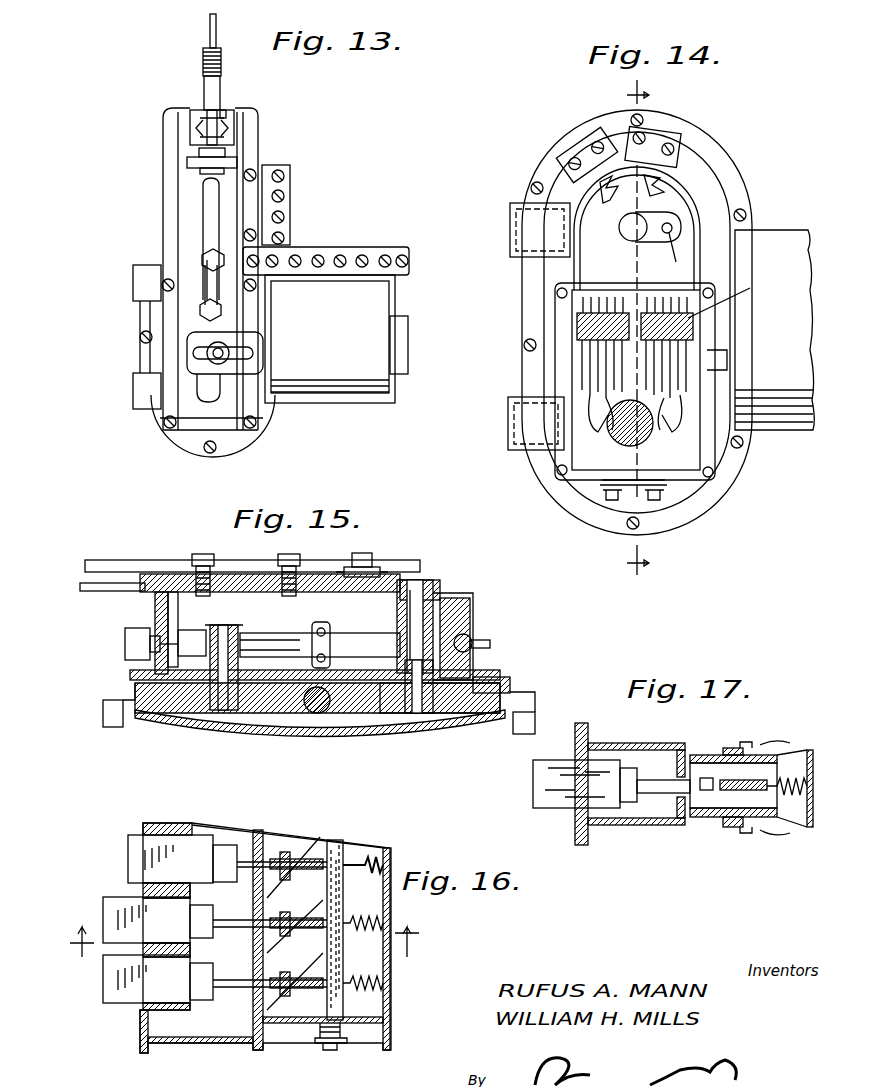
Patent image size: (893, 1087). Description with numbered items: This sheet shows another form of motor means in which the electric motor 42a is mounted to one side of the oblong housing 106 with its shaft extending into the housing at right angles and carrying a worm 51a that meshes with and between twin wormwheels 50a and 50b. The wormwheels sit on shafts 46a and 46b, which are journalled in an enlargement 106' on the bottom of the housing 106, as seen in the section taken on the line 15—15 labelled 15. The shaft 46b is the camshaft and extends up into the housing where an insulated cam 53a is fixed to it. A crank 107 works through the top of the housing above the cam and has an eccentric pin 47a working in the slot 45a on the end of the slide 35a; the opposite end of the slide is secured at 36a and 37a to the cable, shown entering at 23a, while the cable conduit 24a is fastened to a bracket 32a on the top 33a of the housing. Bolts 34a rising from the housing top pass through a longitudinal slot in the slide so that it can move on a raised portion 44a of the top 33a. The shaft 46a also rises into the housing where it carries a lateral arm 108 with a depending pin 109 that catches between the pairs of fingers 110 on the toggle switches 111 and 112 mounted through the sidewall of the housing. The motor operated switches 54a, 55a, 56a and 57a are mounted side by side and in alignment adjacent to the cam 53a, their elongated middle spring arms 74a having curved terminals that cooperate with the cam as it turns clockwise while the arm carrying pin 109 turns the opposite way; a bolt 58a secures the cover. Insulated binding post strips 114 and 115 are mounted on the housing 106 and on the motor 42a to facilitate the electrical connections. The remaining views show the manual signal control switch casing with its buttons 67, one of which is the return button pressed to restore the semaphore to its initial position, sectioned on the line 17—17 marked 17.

In FIG. 13, the operating rod 23a is at (217, 20).
In FIG. 13, the cable conduit 24a is at (219, 82).
In FIG. 13, the bracket 32a is at (224, 112).
In FIG. 13, the housing top 33a is at (235, 125).
In FIG. 15, the housing top 33a is at (95, 590).
In FIG. 13, the cable securing point 36a is at (199, 152).
In FIG. 13, the cable securing point 37a is at (187, 165).
In FIG. 13, the slide 35a is at (188, 336).
In FIG. 15, the slide 35a is at (160, 555).
In FIG. 13, the bolts 34a is at (215, 262).
In FIG. 15, the bolts 34a is at (214, 556).
In FIG. 13, the insulated binding post strip 114 is at (285, 202).
In FIG. 13, the insulated binding post strip 115 is at (345, 250).
In FIG. 13, the electric motor 42a is at (355, 414).
In FIG. 14, the electric motor 42a is at (661, 326).
In FIG. 13, the slot 45a is at (245, 358).
In FIG. 13, the eccentric pin 47a is at (222, 349).
In FIG. 15, the eccentric pin 47a is at (365, 553).
In FIG. 13, the crank 107 is at (208, 396).
In FIG. 15, the crank 107 is at (415, 580).
In FIG. 13, the oblong housing 106 is at (186, 282).
In FIG. 14, the oblong housing 106 is at (635, 345).
In FIG. 15, the oblong housing 106 is at (471, 631).
In FIG. 15, the enlargement 106' is at (517, 690).
In FIG. 14, the section line 15 is at (648, 327).
In FIG. 14, the lateral arm 108 is at (647, 217).
In FIG. 14, the fingers 110 is at (612, 196).
In FIG. 14, the shaft 46a is at (628, 236).
In FIG. 15, the shaft 46a is at (222, 710).
In FIG. 14, the depending pin 109 is at (660, 245).
In FIG. 15, the depending pin 109 is at (225, 643).
In FIG. 14, the toggle switch 111 is at (575, 140).
In FIG. 14, the toggle switch 112 is at (655, 140).
In FIG. 15, the toggle switch 112 is at (125, 644).
In FIG. 14, the motor operated switch 55a is at (628, 300).
In FIG. 14, the motor operated switch 54a is at (585, 300).
In FIG. 14, the motor operated switch 56a is at (660, 300).
In FIG. 14, the motor operated switch 57a is at (733, 294).
In FIG. 14, the middle spring arms 74a is at (632, 424).
In FIG. 14, the insulated cam 53a is at (630, 446).
In FIG. 15, the raised portion 44a is at (140, 585).
In FIG. 15, the bolt 58a is at (465, 640).
In FIG. 15, the wormwheel 50a is at (175, 713).
In FIG. 15, the worm 51a is at (315, 713).
In FIG. 15, the wormwheel 50b is at (380, 713).
In FIG. 15, the camshaft 46b is at (417, 713).
In FIG. 17, the button 67 is at (540, 787).
In FIG. 16, the button 67 is at (135, 866).
In FIG. 16, the section line 17 is at (242, 952).